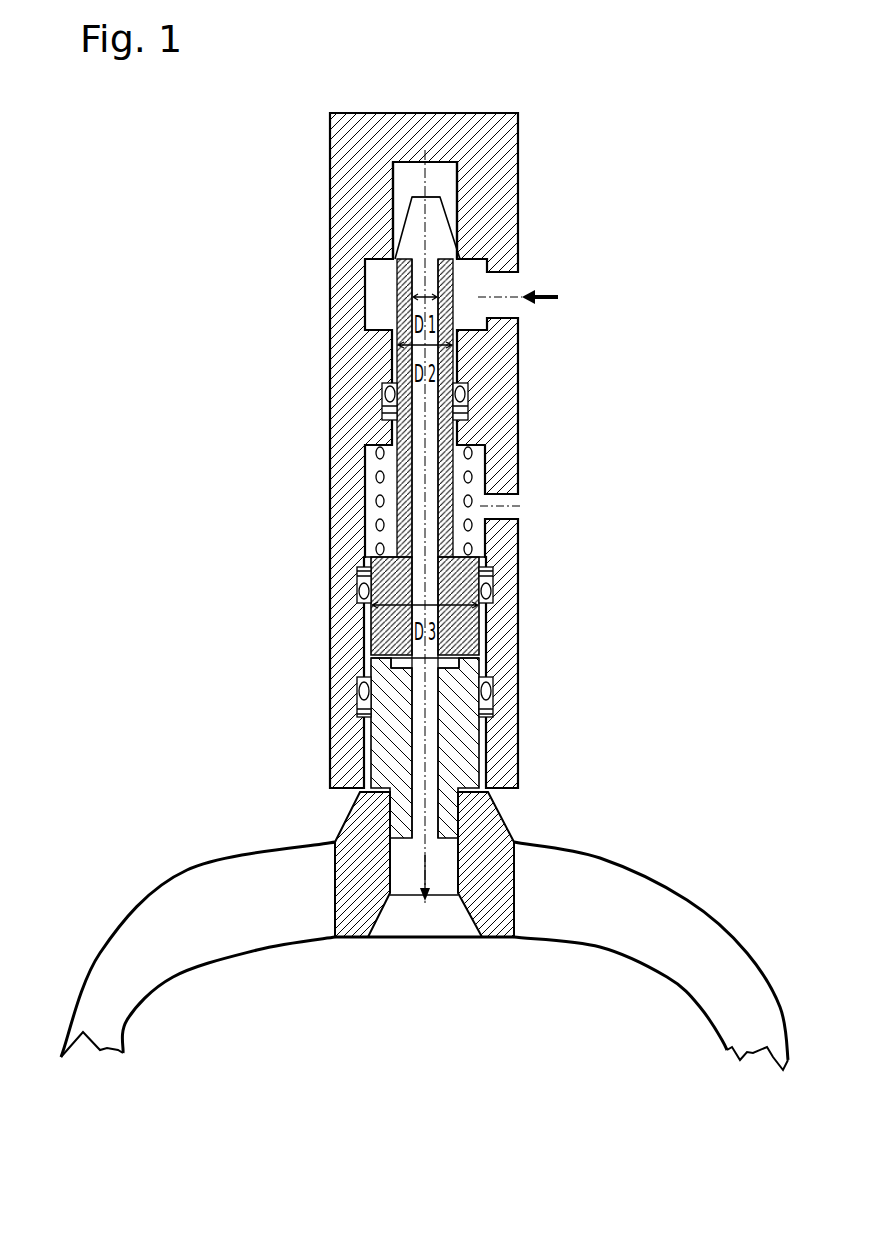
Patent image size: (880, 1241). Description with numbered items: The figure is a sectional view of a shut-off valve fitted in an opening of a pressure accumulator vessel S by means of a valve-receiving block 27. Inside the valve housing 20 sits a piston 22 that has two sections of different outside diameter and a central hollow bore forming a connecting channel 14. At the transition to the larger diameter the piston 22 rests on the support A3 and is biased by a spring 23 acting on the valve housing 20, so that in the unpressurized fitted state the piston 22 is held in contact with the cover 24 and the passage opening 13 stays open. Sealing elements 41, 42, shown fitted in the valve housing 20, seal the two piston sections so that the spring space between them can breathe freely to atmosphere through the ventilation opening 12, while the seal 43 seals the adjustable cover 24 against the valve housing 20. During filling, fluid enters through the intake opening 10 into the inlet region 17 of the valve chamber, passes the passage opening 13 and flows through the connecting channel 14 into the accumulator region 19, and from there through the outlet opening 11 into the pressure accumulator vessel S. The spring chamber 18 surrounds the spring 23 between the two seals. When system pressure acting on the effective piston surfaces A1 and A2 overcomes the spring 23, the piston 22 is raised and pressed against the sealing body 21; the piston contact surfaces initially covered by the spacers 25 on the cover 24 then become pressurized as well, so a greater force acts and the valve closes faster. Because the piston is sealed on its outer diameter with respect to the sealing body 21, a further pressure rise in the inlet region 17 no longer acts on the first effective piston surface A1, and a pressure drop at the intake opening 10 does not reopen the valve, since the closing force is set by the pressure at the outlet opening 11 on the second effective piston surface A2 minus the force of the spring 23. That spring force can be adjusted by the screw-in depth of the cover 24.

The intake opening 10 is at (513, 288).
The outlet opening 11 is at (430, 815).
The ventilation opening 12 is at (513, 499).
The passage opening 13 is at (400, 258).
The connecting channel 14 is at (427, 418).
The inlet region 17 is at (378, 307).
The spring chamber 18 is at (387, 473).
The accumulator region 19 is at (367, 643).
The valve housing 20 is at (503, 172).
The sealing body 21 is at (404, 165).
The piston 22 is at (403, 287).
The spring 23 is at (380, 537).
The cover 24 is at (473, 756).
The spacers 25 is at (464, 660).
The valve-receiving block 27 is at (357, 848).
The sealing element 41 is at (362, 600).
The sealing element 42 is at (388, 395).
The seal 43 is at (360, 692).
The first effective piston surface A1 is at (440, 248).
The second effective piston surface A2 is at (403, 677).
The support A3 is at (462, 553).
The pressure accumulator vessel S is at (632, 918).